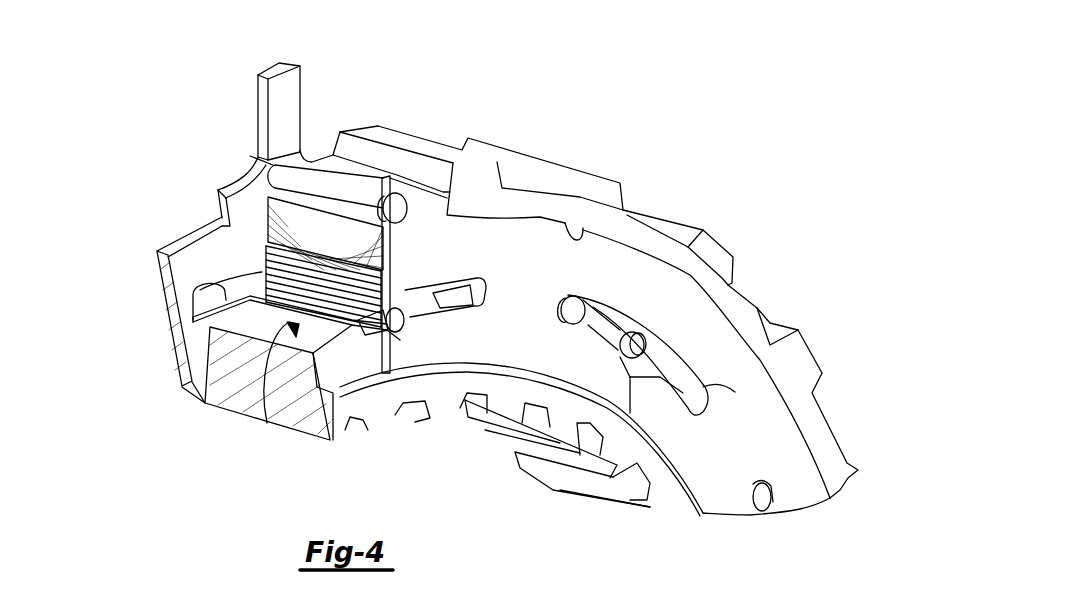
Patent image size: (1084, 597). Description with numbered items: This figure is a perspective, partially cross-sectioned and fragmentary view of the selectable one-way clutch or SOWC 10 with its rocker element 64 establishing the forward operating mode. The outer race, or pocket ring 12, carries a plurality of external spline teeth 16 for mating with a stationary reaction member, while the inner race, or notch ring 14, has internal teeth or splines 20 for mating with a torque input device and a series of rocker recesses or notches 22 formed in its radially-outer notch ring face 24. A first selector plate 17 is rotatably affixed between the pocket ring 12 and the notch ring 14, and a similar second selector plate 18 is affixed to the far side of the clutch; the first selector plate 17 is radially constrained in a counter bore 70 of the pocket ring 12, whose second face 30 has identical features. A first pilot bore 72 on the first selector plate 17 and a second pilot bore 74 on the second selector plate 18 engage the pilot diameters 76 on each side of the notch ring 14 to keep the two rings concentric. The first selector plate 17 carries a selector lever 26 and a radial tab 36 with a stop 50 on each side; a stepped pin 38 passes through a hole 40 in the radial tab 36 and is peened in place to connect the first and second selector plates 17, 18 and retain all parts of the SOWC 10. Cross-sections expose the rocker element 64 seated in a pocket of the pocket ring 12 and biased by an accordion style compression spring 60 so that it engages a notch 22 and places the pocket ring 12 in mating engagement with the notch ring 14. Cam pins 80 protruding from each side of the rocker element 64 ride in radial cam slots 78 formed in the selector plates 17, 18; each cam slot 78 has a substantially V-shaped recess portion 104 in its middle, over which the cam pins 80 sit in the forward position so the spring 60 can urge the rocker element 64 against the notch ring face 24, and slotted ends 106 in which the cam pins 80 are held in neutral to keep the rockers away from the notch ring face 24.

The selectable one-way clutch 10 is at (742, 142).
The pocket ring 12 is at (757, 307).
The notch ring 14 is at (242, 397).
The external spline teeth 16 is at (510, 152).
The first selector plate 17 is at (170, 345).
The second selector plate 18 is at (773, 440).
The internal teeth or splines 20 is at (520, 478).
The rocker recesses or notches 22 is at (370, 373).
The notch ring face 24 is at (273, 422).
The selector lever 26 is at (275, 62).
The second face 30 is at (710, 257).
The radial tab 36 is at (233, 180).
The stepped pin 38 is at (340, 175).
The hole 40 is at (282, 168).
The stop 50 is at (215, 200).
The accordion style compression spring 60 is at (265, 258).
The rocker element 64 is at (367, 350).
The counter bore 70 is at (585, 222).
The first pilot bore 72 is at (192, 392).
The second pilot bore 74 is at (473, 363).
The pilot diameter 76 is at (327, 420).
The radial cam slot 78 is at (205, 298).
The cam pin 80 is at (398, 330).
The V-shaped recess portion 104 is at (630, 378).
The slotted end 106 is at (703, 387).